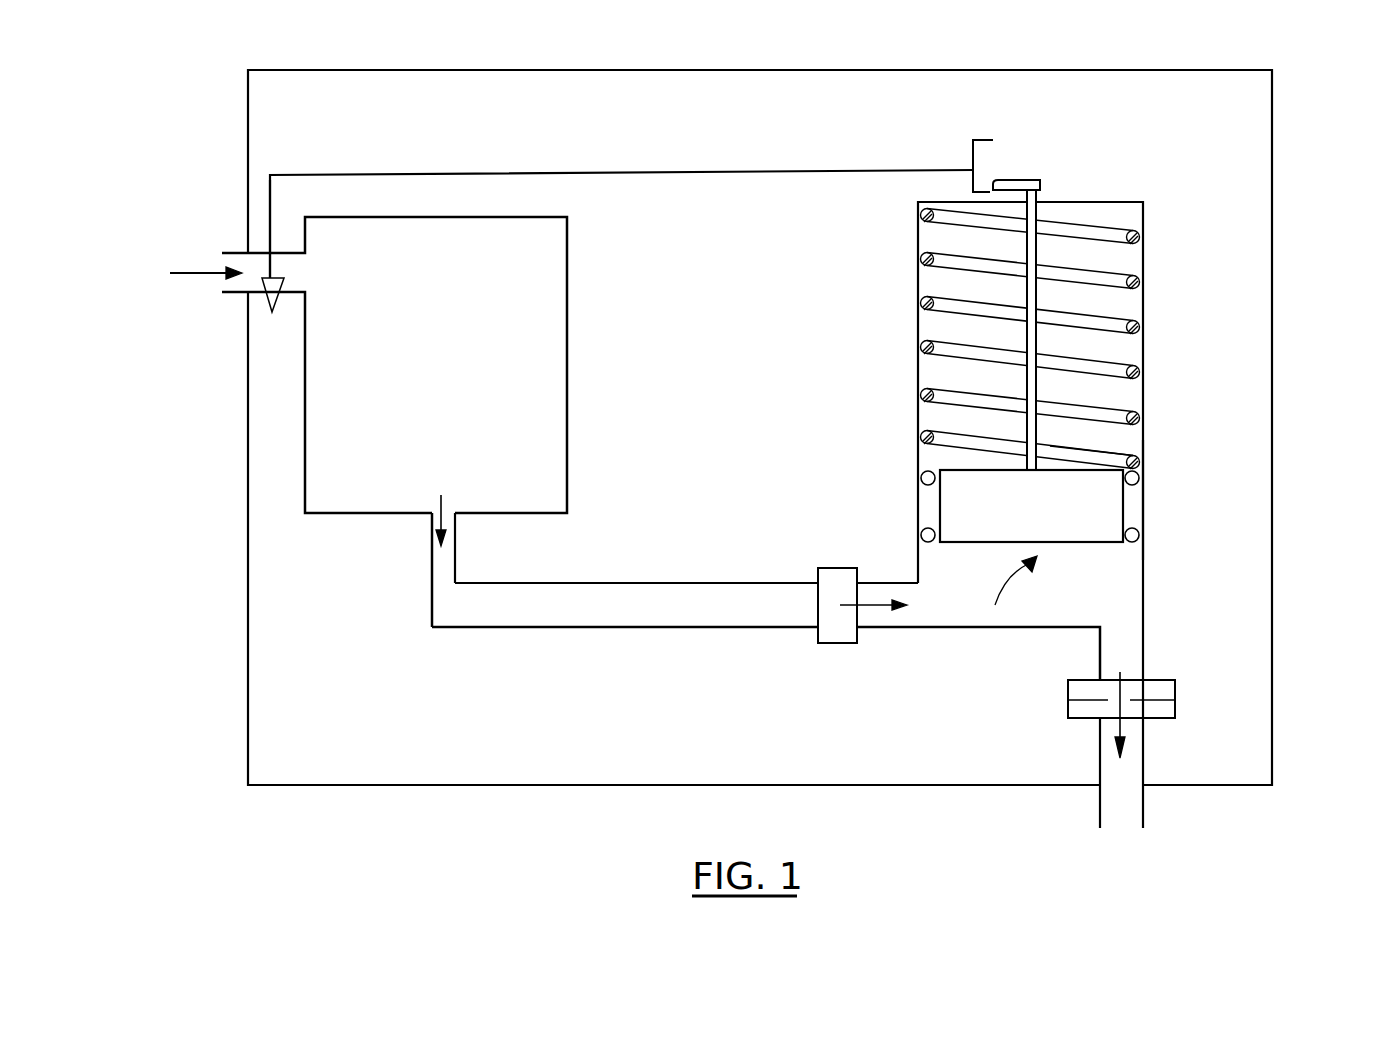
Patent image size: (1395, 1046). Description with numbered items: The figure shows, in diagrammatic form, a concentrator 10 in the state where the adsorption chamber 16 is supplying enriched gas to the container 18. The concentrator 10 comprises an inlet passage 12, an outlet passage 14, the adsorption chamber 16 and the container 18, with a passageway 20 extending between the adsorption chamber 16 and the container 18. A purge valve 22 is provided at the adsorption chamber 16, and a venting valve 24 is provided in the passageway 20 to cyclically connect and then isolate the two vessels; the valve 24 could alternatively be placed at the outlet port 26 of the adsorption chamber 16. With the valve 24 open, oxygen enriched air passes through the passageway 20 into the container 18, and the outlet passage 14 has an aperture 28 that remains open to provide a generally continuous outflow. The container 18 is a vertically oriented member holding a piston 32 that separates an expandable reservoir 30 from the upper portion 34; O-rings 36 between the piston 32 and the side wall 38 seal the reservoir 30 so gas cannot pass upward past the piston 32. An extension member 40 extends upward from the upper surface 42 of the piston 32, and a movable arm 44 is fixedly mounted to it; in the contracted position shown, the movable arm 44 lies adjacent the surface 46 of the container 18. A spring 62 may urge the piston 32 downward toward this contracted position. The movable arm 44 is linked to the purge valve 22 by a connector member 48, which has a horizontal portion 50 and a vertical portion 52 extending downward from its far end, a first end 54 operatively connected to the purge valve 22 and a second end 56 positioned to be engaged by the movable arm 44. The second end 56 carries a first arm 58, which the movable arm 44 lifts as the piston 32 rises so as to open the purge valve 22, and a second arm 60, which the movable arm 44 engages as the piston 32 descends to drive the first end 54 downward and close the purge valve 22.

The concentrator 10 is at (1318, 560).
The inlet passage 12 is at (222, 258).
The outlet passage 14 is at (1118, 822).
The adsorption chamber 16 is at (445, 368).
The container 18 is at (1146, 296).
The passageway 20 is at (664, 613).
The purge valve 22 is at (265, 300).
The valve 24 is at (843, 645).
The outlet port 26 is at (457, 520).
The aperture 28 is at (1124, 698).
The reservoir 30 is at (1088, 556).
The piston 32 is at (1045, 519).
The upper portion 34 is at (1027, 339).
The O-rings 36 is at (1140, 478).
The side wall 38 is at (1146, 503).
The extension member 40 is at (1027, 243).
The upper surface 42 is at (1078, 463).
The movable arm 44 is at (1015, 180).
The surface 46 is at (1093, 202).
The connector member 48 is at (588, 192).
The horizontal portion 50 is at (750, 170).
The vertical portion 52 is at (272, 212).
The first end 54 is at (268, 280).
The second end 56 is at (970, 190).
The first arm 58 is at (992, 140).
The second arm 60 is at (968, 197).
The spring 62 is at (922, 348).